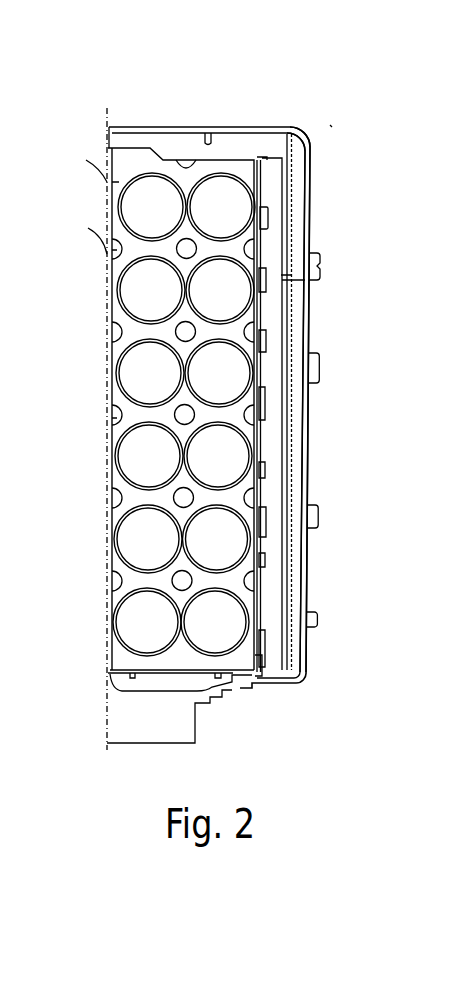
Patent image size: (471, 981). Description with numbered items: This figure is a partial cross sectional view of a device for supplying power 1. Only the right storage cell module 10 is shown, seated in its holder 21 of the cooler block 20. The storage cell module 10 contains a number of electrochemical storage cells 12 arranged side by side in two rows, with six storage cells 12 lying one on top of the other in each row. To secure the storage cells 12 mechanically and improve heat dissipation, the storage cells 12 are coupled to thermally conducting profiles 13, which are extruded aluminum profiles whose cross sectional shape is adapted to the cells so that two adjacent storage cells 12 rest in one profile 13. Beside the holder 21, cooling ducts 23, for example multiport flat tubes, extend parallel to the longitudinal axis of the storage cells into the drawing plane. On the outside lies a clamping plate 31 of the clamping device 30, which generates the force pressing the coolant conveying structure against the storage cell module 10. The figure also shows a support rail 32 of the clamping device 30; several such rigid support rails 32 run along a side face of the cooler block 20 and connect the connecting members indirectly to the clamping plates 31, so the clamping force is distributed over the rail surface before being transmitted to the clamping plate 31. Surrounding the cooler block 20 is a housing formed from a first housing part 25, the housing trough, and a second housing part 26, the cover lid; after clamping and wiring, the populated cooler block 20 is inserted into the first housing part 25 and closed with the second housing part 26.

The device for supplying power 1 is at (334, 126).
The storage cell module 10 is at (133, 105).
The storage cell 12 is at (164, 222).
The profile 13 is at (112, 182).
The cooler block 20 is at (280, 145).
The holder for storage cell module 21 is at (183, 163).
The cooling duct 23 is at (264, 297).
The housing part (housing trough) 25 is at (289, 655).
The housing part (housing cover lid) 26 is at (293, 150).
The clamping device 30 is at (306, 222).
The clamping plate 31 is at (264, 298).
The support rail 32 is at (281, 347).